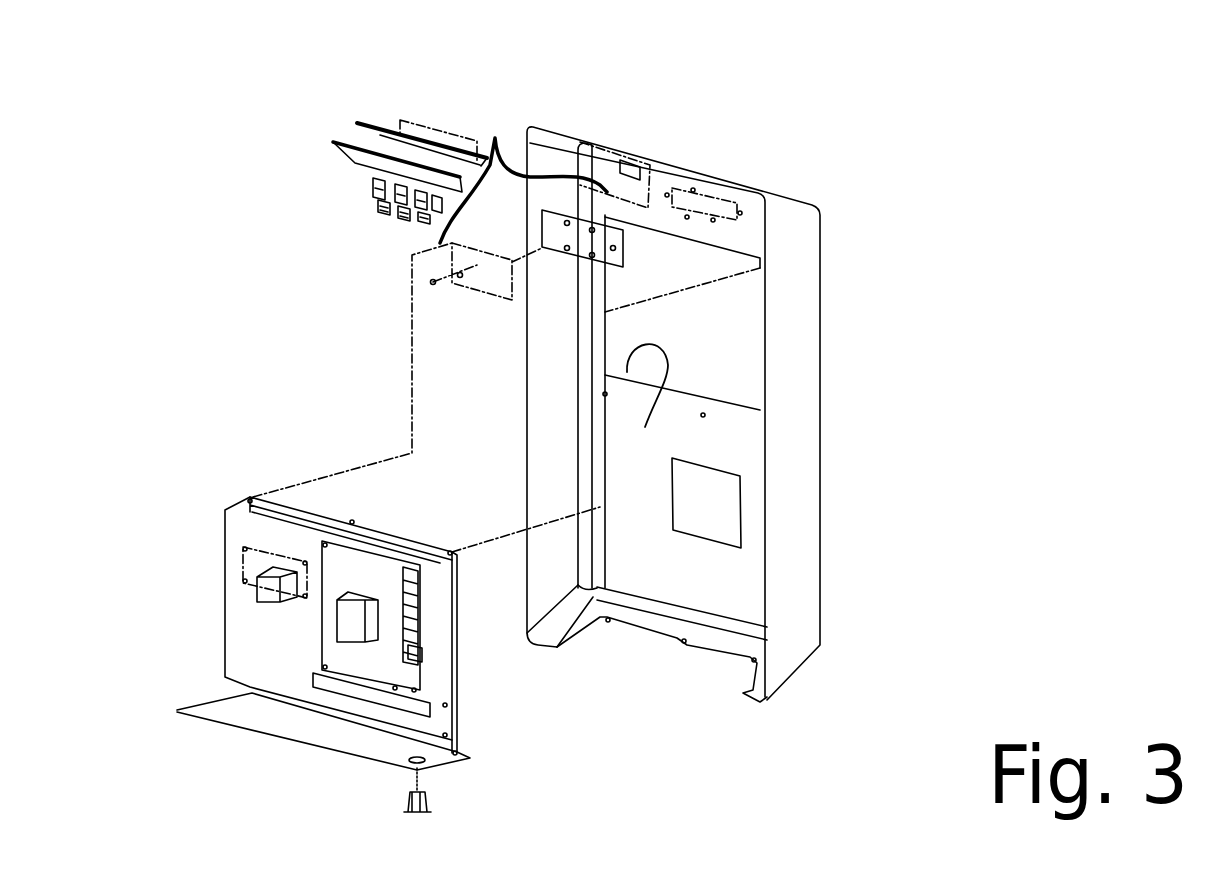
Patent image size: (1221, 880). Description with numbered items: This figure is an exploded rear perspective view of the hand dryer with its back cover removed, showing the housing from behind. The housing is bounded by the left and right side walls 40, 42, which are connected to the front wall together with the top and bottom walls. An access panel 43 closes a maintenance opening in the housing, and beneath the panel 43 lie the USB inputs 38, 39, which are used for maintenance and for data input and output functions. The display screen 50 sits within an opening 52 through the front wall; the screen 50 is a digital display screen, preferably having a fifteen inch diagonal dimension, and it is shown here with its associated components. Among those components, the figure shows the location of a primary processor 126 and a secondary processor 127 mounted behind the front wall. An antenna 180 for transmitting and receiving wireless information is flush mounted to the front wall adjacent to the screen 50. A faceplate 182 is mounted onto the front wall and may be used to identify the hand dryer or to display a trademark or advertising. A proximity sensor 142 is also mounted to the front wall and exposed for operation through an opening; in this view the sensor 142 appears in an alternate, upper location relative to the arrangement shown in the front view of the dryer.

The USB input 38 is at (393, 214).
The USB input 39 is at (393, 198).
The side wall 40 is at (795, 434).
The side wall 42 is at (547, 422).
The access panel 43 is at (374, 128).
The display screen 50 is at (433, 642).
The opening 52 is at (645, 402).
The primary processor 126 is at (352, 630).
The secondary processor 127 is at (268, 606).
The proximity sensor 142 is at (523, 176).
The antenna 180 is at (340, 690).
The faceplate 182 is at (727, 509).